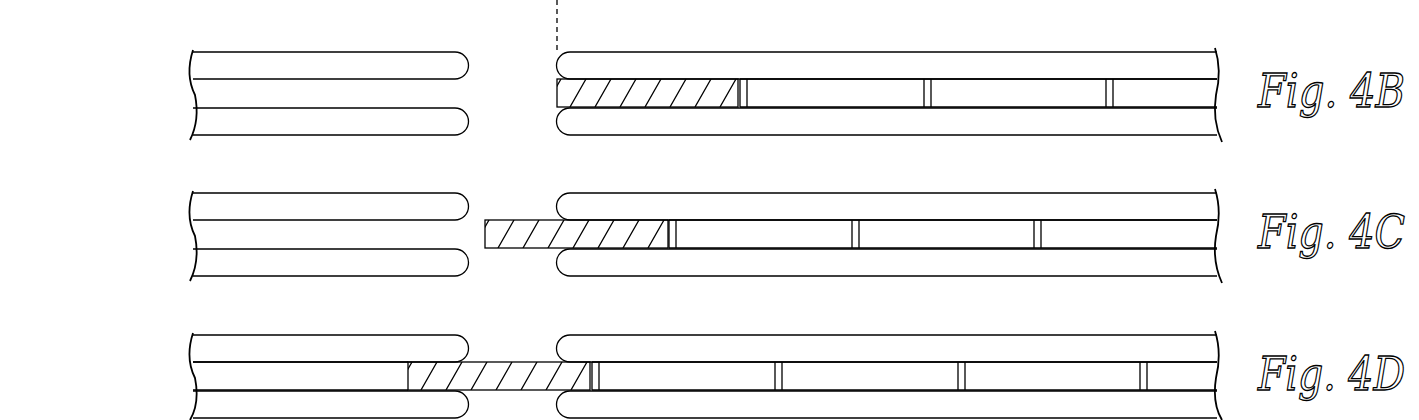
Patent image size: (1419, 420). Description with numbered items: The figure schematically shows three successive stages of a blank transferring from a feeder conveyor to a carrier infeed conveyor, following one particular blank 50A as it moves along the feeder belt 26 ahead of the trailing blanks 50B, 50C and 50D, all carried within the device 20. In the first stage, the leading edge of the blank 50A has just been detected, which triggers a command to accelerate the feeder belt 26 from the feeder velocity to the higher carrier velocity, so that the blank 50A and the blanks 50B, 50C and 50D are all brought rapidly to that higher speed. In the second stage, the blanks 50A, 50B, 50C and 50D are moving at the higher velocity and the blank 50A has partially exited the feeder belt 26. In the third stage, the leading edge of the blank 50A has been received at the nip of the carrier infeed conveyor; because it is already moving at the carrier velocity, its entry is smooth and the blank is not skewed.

In FIG. 4B, the catheter device 20 is at (150, 52).
In FIG. 4C, the catheter device 20 is at (150, 193).
In FIG. 4D, the catheter device 20 is at (150, 335).
In FIG. 4B, the feeder belt 26 is at (1226, 59).
In FIG. 4C, the feeder belt 26 is at (1226, 200).
In FIG. 4D, the feeder belt 26 is at (1226, 342).
In FIG. 4B, the blank 50A is at (557, 98).
In FIG. 4C, the blank 50A is at (485, 239).
In FIG. 4D, the blank 50A is at (408, 381).
In FIG. 4B, the blank 50B is at (832, 93).
In FIG. 4C, the blank 50B is at (760, 234).
In FIG. 4D, the blank 50B is at (683, 376).
In FIG. 4B, the blank 50C is at (1015, 93).
In FIG. 4C, the blank 50C is at (943, 234).
In FIG. 4D, the blank 50C is at (866, 376).
In FIG. 4C, the blank 50D is at (1125, 234).
In FIG. 4D, the blank 50D is at (1049, 376).